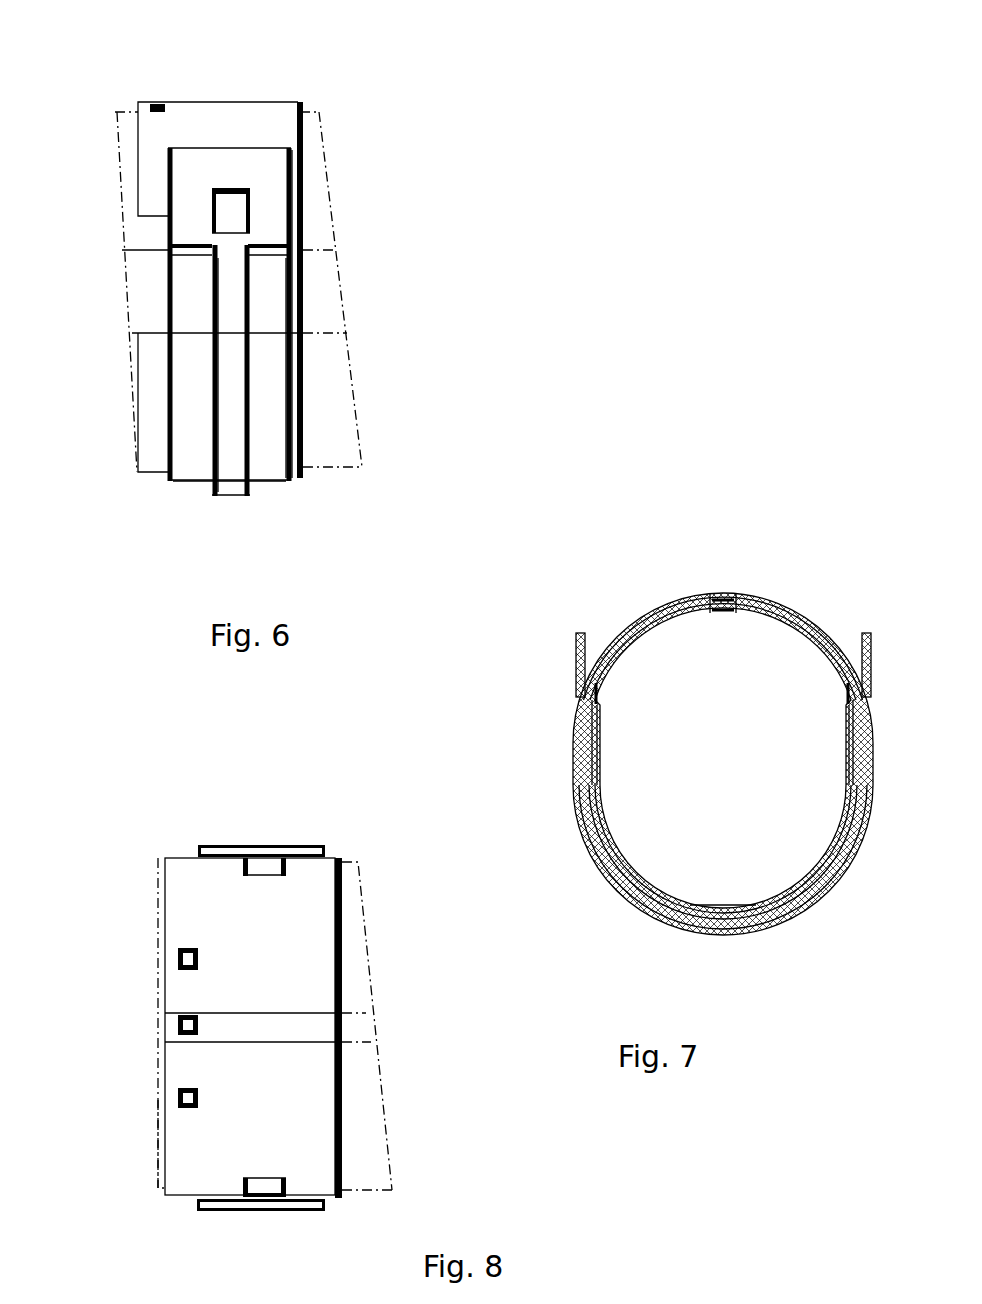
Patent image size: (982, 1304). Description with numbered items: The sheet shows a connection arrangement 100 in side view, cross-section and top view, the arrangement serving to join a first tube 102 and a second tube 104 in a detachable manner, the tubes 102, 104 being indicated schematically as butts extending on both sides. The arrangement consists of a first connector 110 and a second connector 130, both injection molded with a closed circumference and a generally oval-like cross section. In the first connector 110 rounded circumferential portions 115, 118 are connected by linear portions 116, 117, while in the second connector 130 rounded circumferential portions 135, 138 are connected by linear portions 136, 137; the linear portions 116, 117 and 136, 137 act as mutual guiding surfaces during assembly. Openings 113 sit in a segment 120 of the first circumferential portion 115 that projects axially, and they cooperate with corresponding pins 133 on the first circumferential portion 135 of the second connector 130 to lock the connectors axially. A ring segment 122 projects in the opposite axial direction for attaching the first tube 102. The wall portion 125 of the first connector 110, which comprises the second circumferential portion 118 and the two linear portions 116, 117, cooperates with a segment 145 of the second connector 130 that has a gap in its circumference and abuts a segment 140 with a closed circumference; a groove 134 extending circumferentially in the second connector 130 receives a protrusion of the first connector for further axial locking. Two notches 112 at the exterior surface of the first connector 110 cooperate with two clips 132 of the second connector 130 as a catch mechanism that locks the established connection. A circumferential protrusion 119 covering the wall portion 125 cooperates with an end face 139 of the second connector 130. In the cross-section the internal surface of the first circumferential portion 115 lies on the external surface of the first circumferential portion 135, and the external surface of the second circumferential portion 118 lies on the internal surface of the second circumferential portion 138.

In FIG. 6, the connection arrangement 100 is at (205, 78).
In FIG. 7, the connection arrangement 100 is at (743, 478).
In FIG. 8, the connection arrangement 100 is at (260, 1018).
In FIG. 6, the first tube 102 is at (362, 440).
In FIG. 8, the first tube 102 is at (380, 1113).
In FIG. 6, the second tube 104 is at (132, 390).
In FIG. 8, the second tube 104 is at (155, 1177).
In FIG. 6, the first connector 110 is at (272, 123).
In FIG. 7, the first connector 110 is at (695, 590).
In FIG. 8, the first connector 110 is at (185, 870).
In FIG. 6, the notches 112 is at (237, 205).
In FIG. 7, the notches 112 is at (576, 692).
In FIG. 8, the notches 112 is at (265, 862).
In FIG. 8, the openings 113 is at (177, 953).
In FIG. 7, the first circumferential portion 115 is at (746, 600).
In FIG. 7, the linear portion 116 is at (843, 740).
In FIG. 7, the linear portion 117 is at (605, 747).
In FIG. 7, the second circumferential portion 118 is at (637, 905).
In FIG. 6, the circumferential protrusion 119 is at (300, 473).
In FIG. 6, the segment 120 is at (138, 155).
In FIG. 8, the segment 120 is at (167, 907).
In FIG. 6, the ring segment 122 is at (323, 157).
In FIG. 8, the ring segment 122 is at (340, 927).
In FIG. 7, the wall portion 125 is at (863, 845).
In FIG. 6, the second connector 130 is at (200, 437).
In FIG. 7, the second connector 130 is at (717, 937).
In FIG. 6, the clips 132 is at (226, 172).
In FIG. 7, the clips 132 is at (575, 643).
In FIG. 8, the clips 132 is at (307, 843).
In FIG. 8, the pins 133 is at (193, 947).
In FIG. 6, the groove 134 is at (227, 483).
In FIG. 7, the first circumferential portion 135 is at (710, 602).
In FIG. 7, the linear portion 136 is at (870, 790).
In FIG. 6, the linear portion 137 is at (235, 288).
In FIG. 7, the linear portion 137 is at (573, 762).
In FIG. 7, the second circumferential portion 138 is at (683, 902).
In FIG. 6, the end face 139 is at (295, 467).
In FIG. 6, the segment 140 is at (150, 283).
In FIG. 6, the segment 145 is at (270, 397).